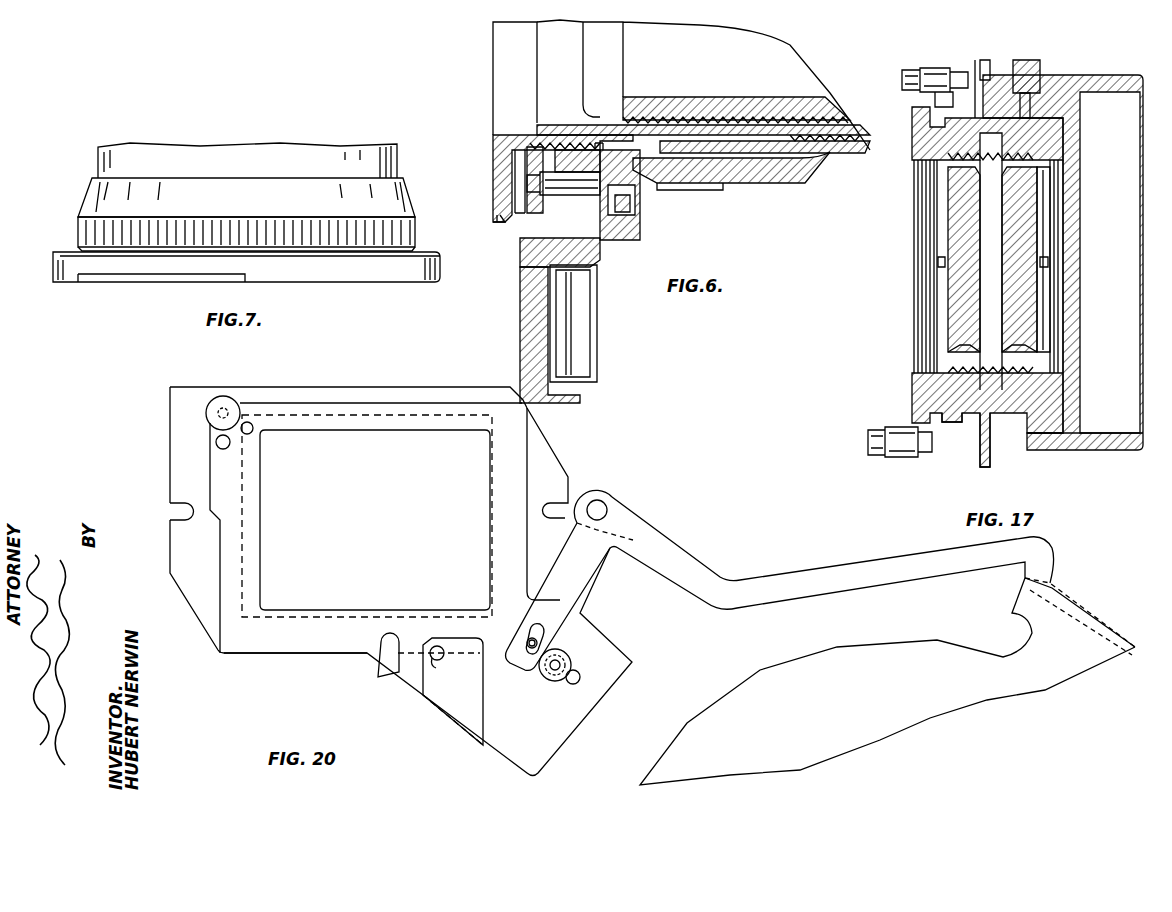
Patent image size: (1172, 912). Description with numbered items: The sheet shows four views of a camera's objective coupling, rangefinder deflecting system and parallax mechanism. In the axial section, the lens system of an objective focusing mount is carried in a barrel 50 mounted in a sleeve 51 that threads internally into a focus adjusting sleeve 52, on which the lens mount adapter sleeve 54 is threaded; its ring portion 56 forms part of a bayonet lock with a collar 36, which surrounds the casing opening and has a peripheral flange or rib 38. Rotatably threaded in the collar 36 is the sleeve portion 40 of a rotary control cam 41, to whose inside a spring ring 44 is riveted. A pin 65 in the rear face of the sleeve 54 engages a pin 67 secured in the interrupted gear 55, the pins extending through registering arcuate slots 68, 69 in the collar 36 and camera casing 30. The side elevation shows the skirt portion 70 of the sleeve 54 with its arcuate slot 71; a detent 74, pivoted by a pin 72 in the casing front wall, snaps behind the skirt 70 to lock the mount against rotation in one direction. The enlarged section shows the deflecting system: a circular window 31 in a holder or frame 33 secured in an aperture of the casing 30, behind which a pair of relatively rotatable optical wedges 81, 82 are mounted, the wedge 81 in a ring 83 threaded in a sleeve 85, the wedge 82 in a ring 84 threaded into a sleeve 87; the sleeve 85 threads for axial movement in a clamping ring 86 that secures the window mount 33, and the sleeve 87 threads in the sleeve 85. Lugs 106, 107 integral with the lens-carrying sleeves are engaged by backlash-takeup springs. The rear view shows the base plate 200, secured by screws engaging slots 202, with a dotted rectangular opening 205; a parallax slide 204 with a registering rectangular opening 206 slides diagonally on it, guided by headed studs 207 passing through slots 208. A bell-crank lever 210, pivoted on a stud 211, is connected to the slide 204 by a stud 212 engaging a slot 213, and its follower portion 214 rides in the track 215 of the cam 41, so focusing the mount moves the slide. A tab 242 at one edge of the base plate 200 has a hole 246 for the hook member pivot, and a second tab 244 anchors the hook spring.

In FIG. 17, the camera casing 30 is at (1025, 62).
In FIG. 17, the window 31 is at (1075, 270).
In FIG. 17, the holder or frame 33 is at (1080, 445).
In FIG. 6, the collar 36 is at (618, 143).
In FIG. 6, the peripheral flange or rib 38 is at (632, 222).
In FIG. 6, the sleeve portion 40 is at (493, 116).
In FIG. 6, the rotary control cam 41 is at (493, 198).
In FIG. 20, the rotary control cam 41 is at (985, 690).
In FIG. 6, the spring ring 44 is at (556, 62).
In FIG. 6, the barrel 50 is at (775, 70).
In FIG. 6, the sleeve 51 is at (852, 122).
In FIG. 7, the sleeve 52 is at (372, 160).
In FIG. 6, the sleeve 52 is at (835, 152).
In FIG. 7, the lens mount adapter sleeve 54 is at (385, 202).
In FIG. 6, the lens mount adapter sleeve 54 is at (740, 168).
In FIG. 6, the gear 55 is at (525, 215).
In FIG. 6, the ring portion 56 is at (612, 245).
In FIG. 6, the pin 65 is at (630, 195).
In FIG. 6, the pin 67 is at (545, 180).
In FIG. 6, the arcuate slot 68 is at (585, 150).
In FIG. 6, the arcuate slot 69 is at (558, 212).
In FIG. 7, the skirt portion 70 is at (395, 282).
In FIG. 7, the arcuate slot 71 is at (186, 282).
In FIG. 6, the pin 72 is at (572, 358).
In FIG. 6, the detent 74 is at (598, 333).
In FIG. 17, the optical wedge 81 is at (1025, 210).
In FIG. 17, the optical wedge 82 is at (965, 330).
In FIG. 17, the ring 83 is at (1045, 190).
In FIG. 17, the ring 84 is at (940, 203).
In FIG. 17, the sleeve 85 is at (953, 423).
In FIG. 17, the clamping ring 86 is at (1000, 452).
In FIG. 17, the sleeve 87 is at (915, 402).
In FIG. 17, the lug 106 is at (902, 450).
In FIG. 17, the lug 107 is at (942, 70).
In FIG. 20, the base plate 200 is at (200, 583).
In FIG. 20, the slot 202 is at (170, 510).
In FIG. 20, the parallax slide 204 is at (310, 648).
In FIG. 20, the rectangular opening 205 is at (398, 415).
In FIG. 20, the rectangular opening 206 is at (490, 575).
In FIG. 20, the headed stud 207 is at (235, 403).
In FIG. 20, the slot 208 is at (252, 432).
In FIG. 20, the bell-crank lever 210 is at (783, 570).
In FIG. 20, the stud 211 is at (603, 502).
In FIG. 20, the stud 212 is at (527, 640).
In FIG. 20, the slot 213 is at (530, 648).
In FIG. 20, the follower portion 214 is at (1058, 590).
In FIG. 6, the track 215 is at (498, 224).
In FIG. 20, the track 215 is at (1105, 622).
In FIG. 20, the tab 242 is at (453, 705).
In FIG. 20, the tab 244 is at (380, 648).
In FIG. 20, the hole 246 is at (453, 664).